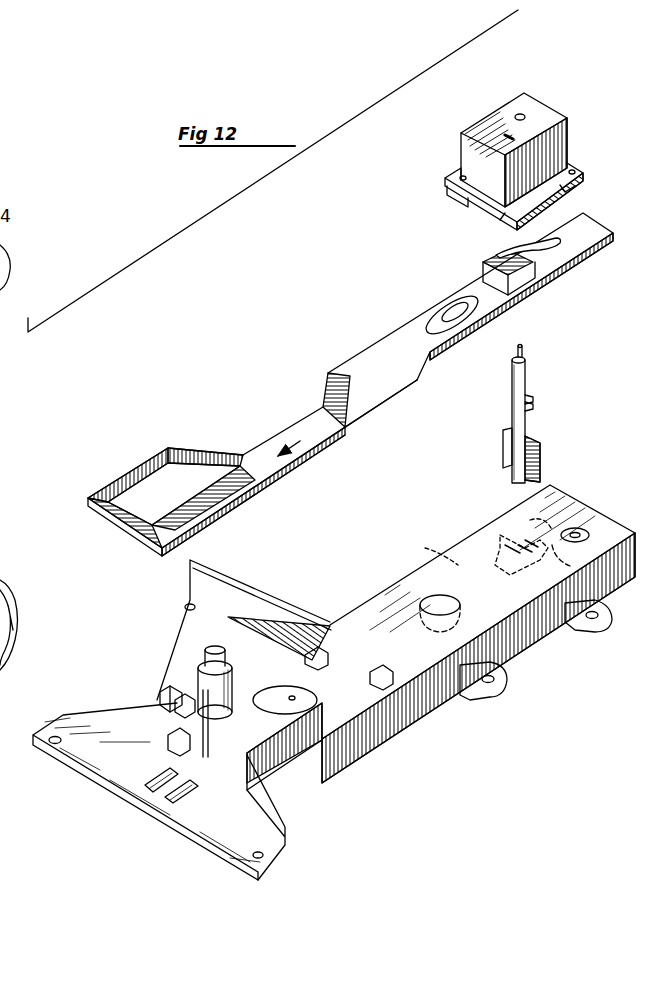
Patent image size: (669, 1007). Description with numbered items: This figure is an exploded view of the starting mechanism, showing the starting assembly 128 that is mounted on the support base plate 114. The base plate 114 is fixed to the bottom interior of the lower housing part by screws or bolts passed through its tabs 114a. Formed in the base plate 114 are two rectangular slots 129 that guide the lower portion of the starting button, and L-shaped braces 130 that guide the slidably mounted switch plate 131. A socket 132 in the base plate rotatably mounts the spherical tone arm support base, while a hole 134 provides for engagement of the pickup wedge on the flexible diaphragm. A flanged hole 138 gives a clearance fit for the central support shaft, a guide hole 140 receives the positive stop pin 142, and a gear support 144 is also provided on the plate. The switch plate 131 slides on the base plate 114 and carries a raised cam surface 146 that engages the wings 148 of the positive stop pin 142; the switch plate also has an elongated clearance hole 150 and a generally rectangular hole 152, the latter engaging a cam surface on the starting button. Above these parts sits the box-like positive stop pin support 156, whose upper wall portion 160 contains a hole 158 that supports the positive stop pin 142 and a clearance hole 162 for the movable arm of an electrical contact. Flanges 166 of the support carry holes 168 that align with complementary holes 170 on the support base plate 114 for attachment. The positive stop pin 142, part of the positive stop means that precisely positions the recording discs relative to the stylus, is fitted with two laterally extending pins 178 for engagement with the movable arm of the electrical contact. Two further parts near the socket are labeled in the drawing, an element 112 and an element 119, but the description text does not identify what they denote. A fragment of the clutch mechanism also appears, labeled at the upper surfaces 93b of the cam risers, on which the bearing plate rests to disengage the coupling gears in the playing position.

The positive stop pin support 156 is at (514, 146).
The hole 158 is at (522, 113).
The upper wall portion 160 is at (490, 118).
The clearance hole 162 is at (508, 133).
The flanges 166 is at (452, 172).
The holes 168 is at (460, 170).
The starting assembly 128 is at (350, 384).
The switch plate 131 is at (401, 370).
The elongated clearance hole 150 is at (452, 310).
The raised cam surface 146 is at (520, 248).
The rectangular hole 152 is at (153, 470).
The positive stop pin 142 is at (516, 414).
The laterally extending pins 178 is at (535, 401).
The wings 148 is at (520, 458).
The complementary holes 170 is at (505, 525).
The gear support 144 is at (595, 525).
The guide hole 140 is at (505, 545).
The flanged hole 138 is at (418, 600).
The support base plate 114 is at (322, 685).
The tabs 114a is at (48, 738).
The socket 132 is at (218, 690).
The pin 112 is at (206, 757).
The hole 134 is at (285, 700).
The bracket 119 is at (175, 690).
The L-shaped braces 130 is at (165, 716).
The rectangular slots 129 is at (165, 790).
The upper surfaces 93b is at (23, 613).